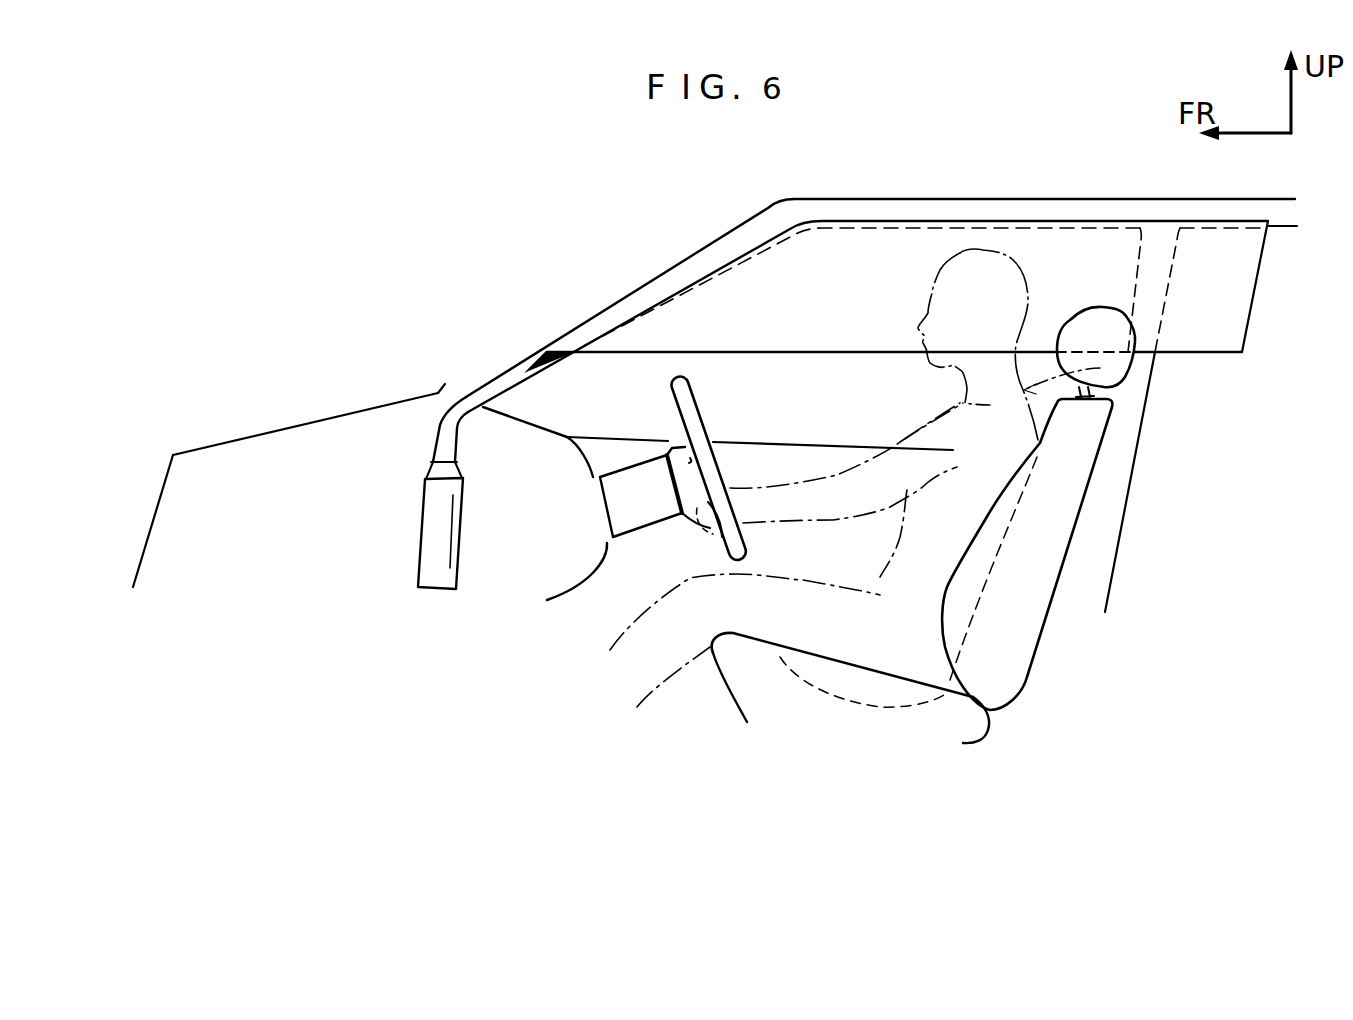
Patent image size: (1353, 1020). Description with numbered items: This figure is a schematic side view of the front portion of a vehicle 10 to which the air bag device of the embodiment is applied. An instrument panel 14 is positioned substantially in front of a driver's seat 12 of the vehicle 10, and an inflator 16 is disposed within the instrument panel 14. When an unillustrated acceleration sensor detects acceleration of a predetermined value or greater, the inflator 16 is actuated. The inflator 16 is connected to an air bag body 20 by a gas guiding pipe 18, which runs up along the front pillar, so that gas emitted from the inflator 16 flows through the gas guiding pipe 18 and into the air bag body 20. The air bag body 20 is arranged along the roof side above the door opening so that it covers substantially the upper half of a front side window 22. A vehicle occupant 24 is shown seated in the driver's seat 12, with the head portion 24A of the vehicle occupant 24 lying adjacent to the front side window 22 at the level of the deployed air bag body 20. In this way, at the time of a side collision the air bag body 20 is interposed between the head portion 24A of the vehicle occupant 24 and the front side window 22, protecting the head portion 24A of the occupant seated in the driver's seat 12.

The vehicle 10 is at (995, 184).
The driver's seat 12 is at (1042, 630).
The instrument panel 14 is at (570, 430).
The inflator 16 is at (433, 535).
The gas guiding pipe 18 is at (473, 395).
The air bag body 20 is at (857, 256).
The front side window 22 is at (763, 392).
The vehicle occupant 24 is at (1120, 377).
The head portion 24A is at (1027, 300).